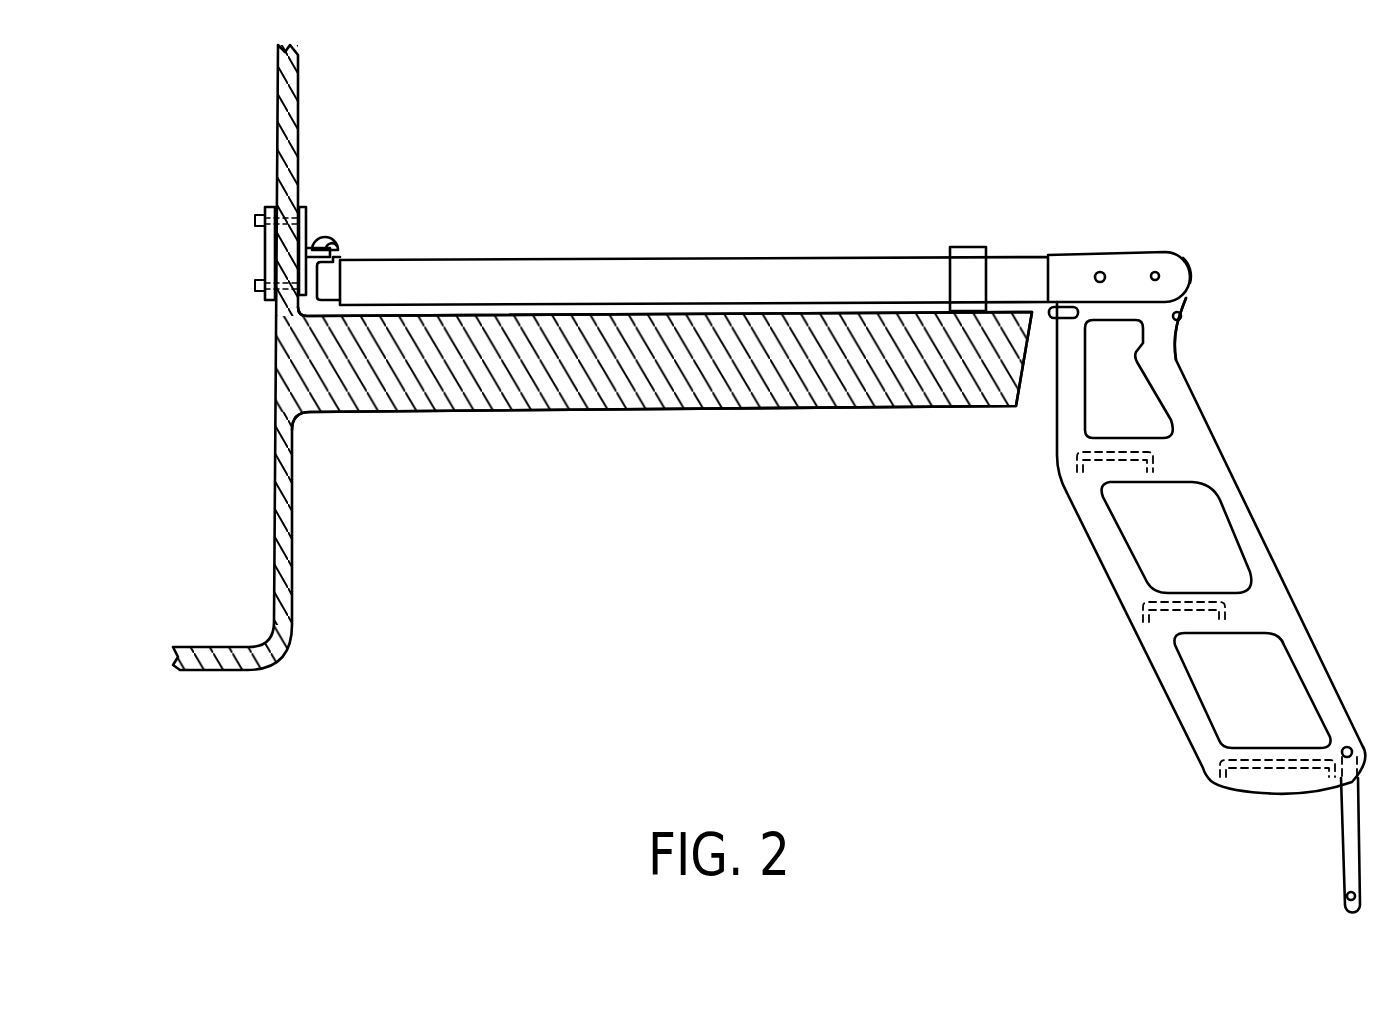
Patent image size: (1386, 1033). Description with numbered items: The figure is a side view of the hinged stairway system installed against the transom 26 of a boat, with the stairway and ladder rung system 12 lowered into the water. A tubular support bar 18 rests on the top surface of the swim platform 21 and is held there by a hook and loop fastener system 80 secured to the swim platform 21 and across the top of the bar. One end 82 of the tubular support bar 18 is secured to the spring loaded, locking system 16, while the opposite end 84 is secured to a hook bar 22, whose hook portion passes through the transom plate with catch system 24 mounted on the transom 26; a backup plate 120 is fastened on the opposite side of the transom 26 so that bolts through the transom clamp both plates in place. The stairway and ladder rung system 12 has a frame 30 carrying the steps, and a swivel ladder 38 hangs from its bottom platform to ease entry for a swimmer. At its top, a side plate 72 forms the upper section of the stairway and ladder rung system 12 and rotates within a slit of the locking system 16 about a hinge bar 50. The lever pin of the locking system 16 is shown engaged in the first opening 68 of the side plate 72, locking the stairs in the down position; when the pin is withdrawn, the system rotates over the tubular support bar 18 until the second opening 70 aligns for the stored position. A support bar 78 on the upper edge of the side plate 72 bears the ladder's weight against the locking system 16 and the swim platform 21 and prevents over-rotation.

The stairway and ladder rung system 12 is at (1165, 695).
The spring loaded, locking system 16 is at (1120, 262).
The tubular support bar 18 is at (598, 272).
The swim platform 21 is at (428, 385).
The hook bar 22 is at (330, 233).
The transom plate with catch system 24 is at (310, 213).
The transom 26 is at (290, 102).
The frame 30 is at (1232, 512).
The swivel ladder 38 is at (1343, 855).
The hinge bar 50 is at (1187, 262).
The opening 68 is at (1100, 272).
The second opening 70 is at (1182, 317).
The side plate 72 is at (1190, 298).
The support bar 78 is at (1063, 319).
The hook and loop fastener system 80 is at (968, 247).
The one end 82 is at (1160, 273).
The opposite end 84 is at (350, 255).
The backup plate 120 is at (272, 207).